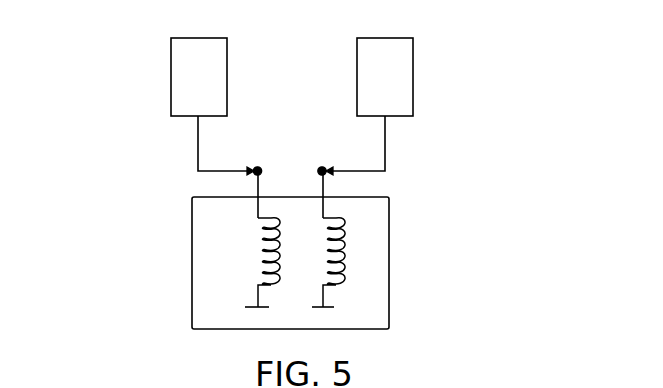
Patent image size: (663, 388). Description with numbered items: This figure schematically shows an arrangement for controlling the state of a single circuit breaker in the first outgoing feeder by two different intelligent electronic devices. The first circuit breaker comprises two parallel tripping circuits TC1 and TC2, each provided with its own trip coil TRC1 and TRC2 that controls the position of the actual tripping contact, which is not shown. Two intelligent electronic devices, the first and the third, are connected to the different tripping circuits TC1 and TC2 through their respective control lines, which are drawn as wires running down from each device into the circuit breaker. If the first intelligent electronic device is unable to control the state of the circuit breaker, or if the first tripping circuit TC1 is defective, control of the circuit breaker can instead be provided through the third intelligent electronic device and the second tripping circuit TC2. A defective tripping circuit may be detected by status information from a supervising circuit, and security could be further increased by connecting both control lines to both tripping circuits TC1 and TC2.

The first tripping circuit TC1 is at (258, 187).
The trip coil TRC1 is at (258, 248).
The trip coil TRC2 is at (337, 281).
The second tripping circuit TC2 is at (323, 188).